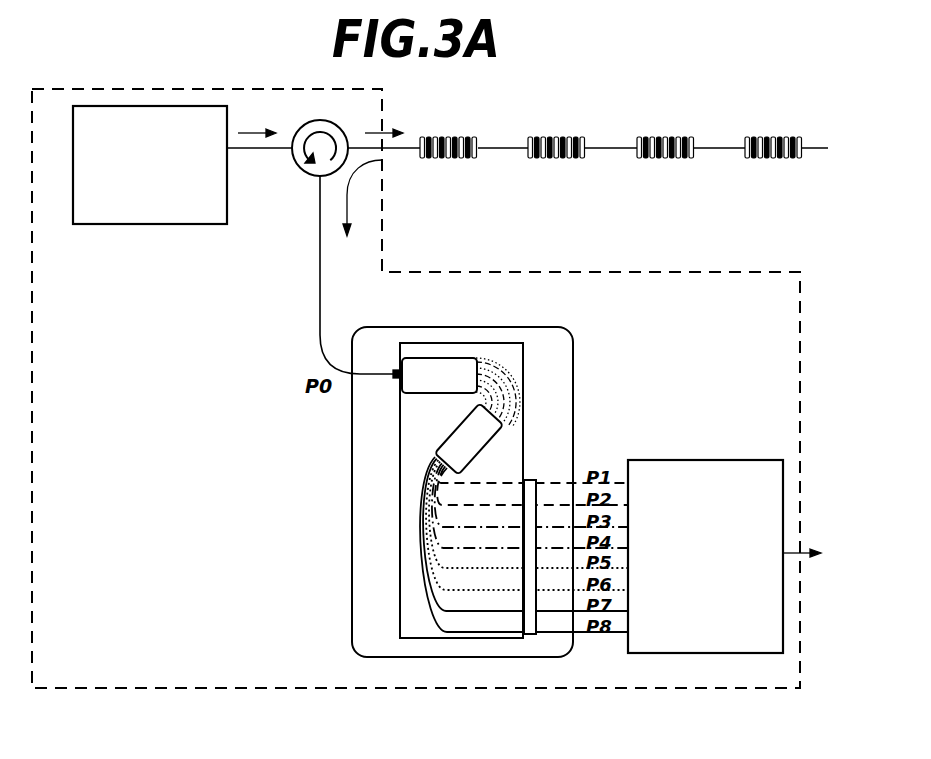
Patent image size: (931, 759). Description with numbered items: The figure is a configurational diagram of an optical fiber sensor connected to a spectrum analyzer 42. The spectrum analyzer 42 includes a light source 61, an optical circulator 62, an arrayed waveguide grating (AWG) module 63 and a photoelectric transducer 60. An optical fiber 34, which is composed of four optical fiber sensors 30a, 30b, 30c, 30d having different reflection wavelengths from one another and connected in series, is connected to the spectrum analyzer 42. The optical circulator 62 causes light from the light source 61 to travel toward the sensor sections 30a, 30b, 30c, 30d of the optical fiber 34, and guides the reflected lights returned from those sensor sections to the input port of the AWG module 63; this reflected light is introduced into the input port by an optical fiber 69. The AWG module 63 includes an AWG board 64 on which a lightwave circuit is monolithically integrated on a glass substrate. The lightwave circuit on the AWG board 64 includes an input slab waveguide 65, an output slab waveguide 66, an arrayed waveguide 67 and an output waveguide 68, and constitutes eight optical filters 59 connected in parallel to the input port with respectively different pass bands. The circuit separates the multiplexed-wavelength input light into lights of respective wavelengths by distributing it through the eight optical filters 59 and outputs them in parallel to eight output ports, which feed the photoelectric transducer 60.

The optical fiber sensor 30a is at (450, 134).
The optical fiber sensor 30b is at (558, 134).
The optical fiber sensor 30c is at (663, 134).
The optical fiber sensor 30d is at (774, 134).
The optical fiber 34 is at (818, 142).
The spectrum analyzer 42 is at (312, 88).
The optical filters 59 is at (530, 633).
The photoelectric transducer 60 is at (702, 460).
The light source 61 is at (182, 226).
The optical circulator 62 is at (304, 172).
The arrayed waveguide grating (AWG) module 63 is at (352, 463).
The AWG board 64 is at (400, 557).
The input slab waveguide 65 is at (452, 358).
The output slab waveguide 66 is at (497, 430).
The arrayed waveguide 67 is at (500, 366).
The output waveguide 68 is at (428, 595).
The optical fiber 69 is at (319, 322).